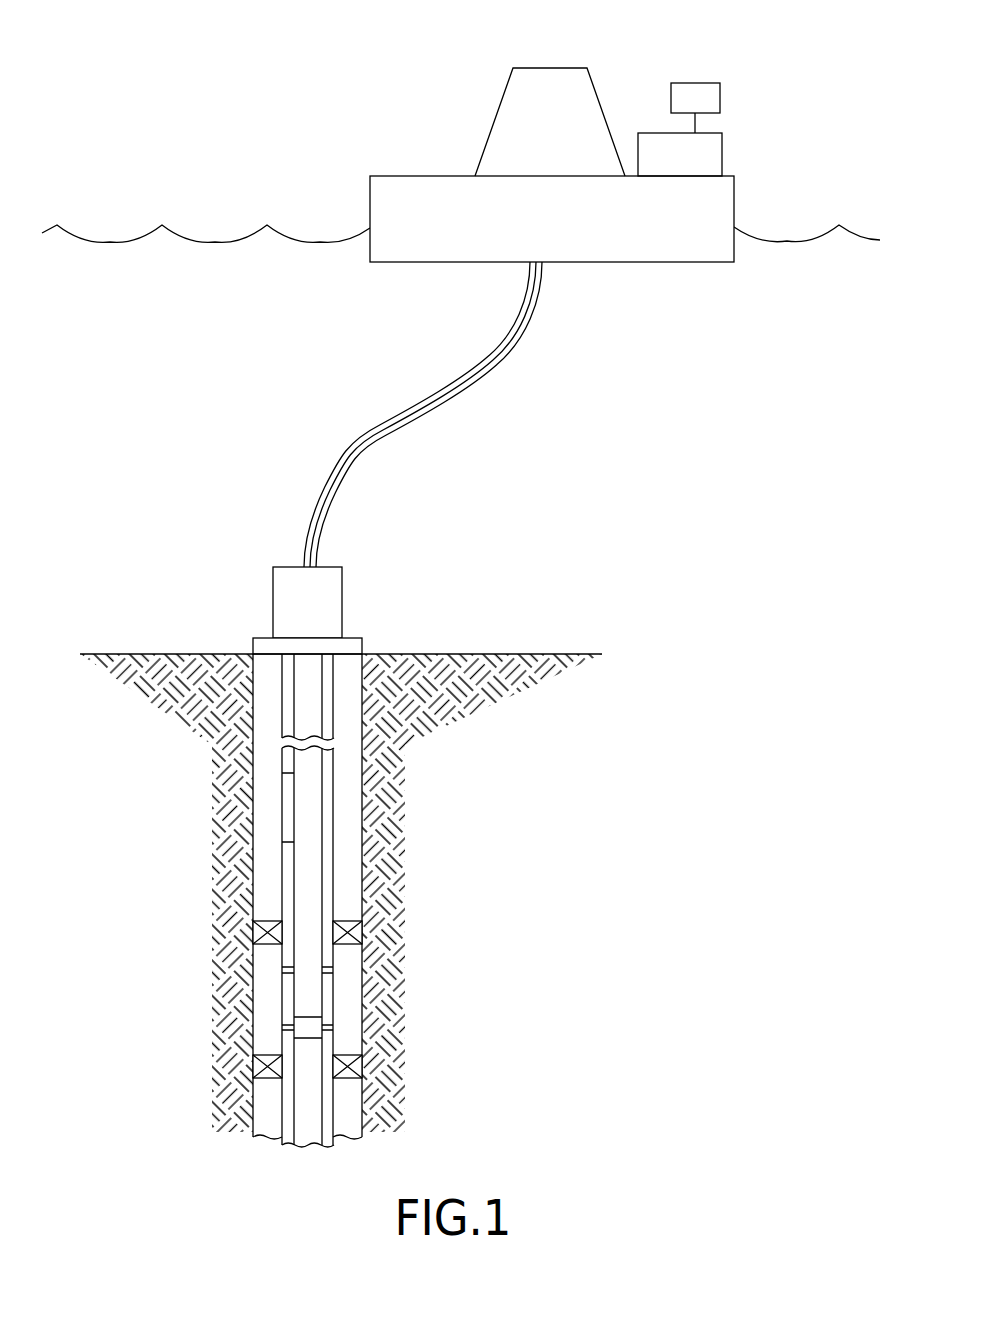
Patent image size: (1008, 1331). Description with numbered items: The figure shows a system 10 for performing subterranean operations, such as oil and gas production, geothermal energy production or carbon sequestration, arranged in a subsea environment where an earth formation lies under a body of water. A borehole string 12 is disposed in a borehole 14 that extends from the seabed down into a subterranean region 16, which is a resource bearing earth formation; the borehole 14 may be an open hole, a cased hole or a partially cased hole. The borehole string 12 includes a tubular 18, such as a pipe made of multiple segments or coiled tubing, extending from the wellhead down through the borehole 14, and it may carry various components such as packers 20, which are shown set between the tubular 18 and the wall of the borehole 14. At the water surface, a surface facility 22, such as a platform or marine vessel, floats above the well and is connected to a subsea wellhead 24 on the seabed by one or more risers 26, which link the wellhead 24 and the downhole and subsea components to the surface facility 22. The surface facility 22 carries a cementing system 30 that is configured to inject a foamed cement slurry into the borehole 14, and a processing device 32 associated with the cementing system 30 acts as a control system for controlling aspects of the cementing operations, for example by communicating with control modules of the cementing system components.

The system 10 is at (197, 85).
The borehole string 12 is at (300, 900).
The borehole 14 is at (350, 883).
The subterranean region 16 is at (232, 736).
The tubular 18 is at (282, 691).
The packers 20 is at (258, 926).
The surface facility 22 is at (422, 183).
The subsea wellhead 24 is at (293, 567).
The risers 26 is at (487, 367).
The cementing system 30 is at (723, 155).
The processing device 32 is at (695, 83).